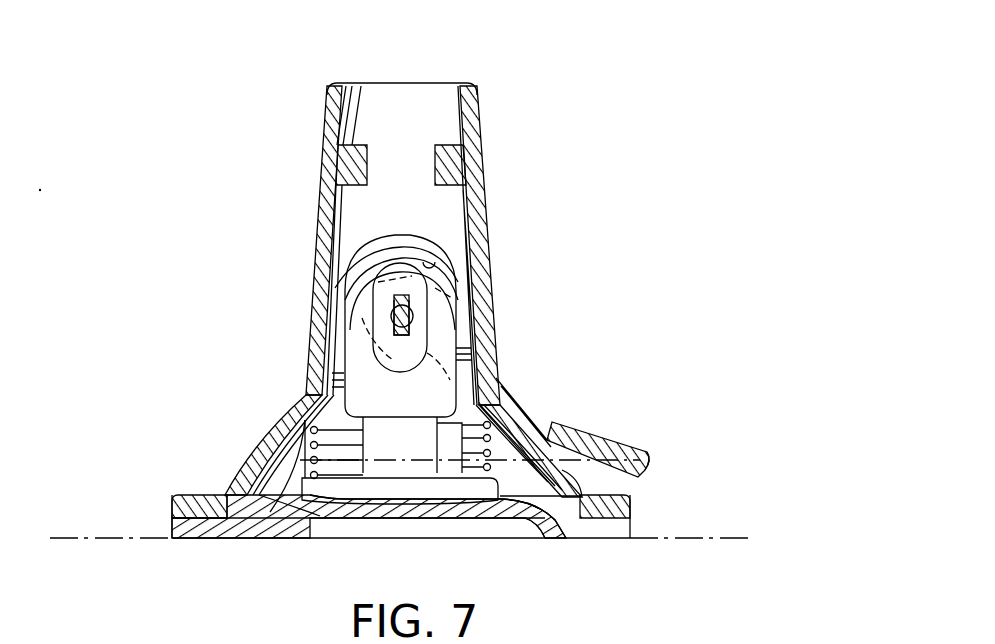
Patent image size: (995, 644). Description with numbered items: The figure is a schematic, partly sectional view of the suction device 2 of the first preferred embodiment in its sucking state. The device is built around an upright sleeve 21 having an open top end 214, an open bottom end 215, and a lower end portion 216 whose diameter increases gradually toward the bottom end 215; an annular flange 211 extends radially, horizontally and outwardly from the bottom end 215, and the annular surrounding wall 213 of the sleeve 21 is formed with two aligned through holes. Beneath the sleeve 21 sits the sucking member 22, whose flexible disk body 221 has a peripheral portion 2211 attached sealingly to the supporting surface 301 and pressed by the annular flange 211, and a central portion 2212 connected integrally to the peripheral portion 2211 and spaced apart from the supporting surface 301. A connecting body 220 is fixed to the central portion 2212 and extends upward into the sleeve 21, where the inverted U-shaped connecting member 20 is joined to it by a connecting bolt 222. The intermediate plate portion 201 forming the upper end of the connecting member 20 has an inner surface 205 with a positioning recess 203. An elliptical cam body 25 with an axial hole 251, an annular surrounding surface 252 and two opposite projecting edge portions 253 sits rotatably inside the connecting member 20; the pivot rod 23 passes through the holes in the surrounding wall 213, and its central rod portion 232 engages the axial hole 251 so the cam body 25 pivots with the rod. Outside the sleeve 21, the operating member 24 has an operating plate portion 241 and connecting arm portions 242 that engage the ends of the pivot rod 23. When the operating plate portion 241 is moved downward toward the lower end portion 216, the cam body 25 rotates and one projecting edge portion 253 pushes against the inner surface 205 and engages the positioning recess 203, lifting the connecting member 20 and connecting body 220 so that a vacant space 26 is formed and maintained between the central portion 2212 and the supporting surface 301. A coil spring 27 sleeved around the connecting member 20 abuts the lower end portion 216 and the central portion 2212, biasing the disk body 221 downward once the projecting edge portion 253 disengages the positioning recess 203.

The suction device 2 is at (557, 112).
The connecting member 20 is at (393, 222).
The upright sleeve 21 is at (482, 125).
The sucking member 22 is at (183, 355).
The pivot rod 23 is at (417, 300).
The operating member 24 is at (645, 418).
The cam body 25 is at (368, 272).
The vacant space 26 is at (332, 527).
The coil spring 27 is at (512, 420).
The intermediate plate portion 201 is at (404, 235).
The positioning recess 203 is at (456, 290).
The inner surface 205 is at (433, 262).
The annular flange 211 is at (193, 492).
The annular surrounding wall 213 is at (330, 108).
The open top end 214 is at (363, 82).
The open bottom end 215 is at (553, 517).
The lower end portion 216 is at (567, 478).
The connecting body 220 is at (318, 428).
The flexible disk body 221 is at (283, 513).
The connecting bolt 222 is at (648, 456).
The central rod portion 232 is at (365, 285).
The operating plate portion 241 is at (552, 423).
The connecting arm portion 242 is at (497, 383).
The axial hole 251 is at (395, 318).
The annular surrounding surface 252 is at (375, 305).
The projecting edge portion 253 is at (390, 252).
The supporting surface 301 is at (120, 548).
The peripheral portion 2211 is at (627, 530).
The central portion 2212 is at (400, 520).